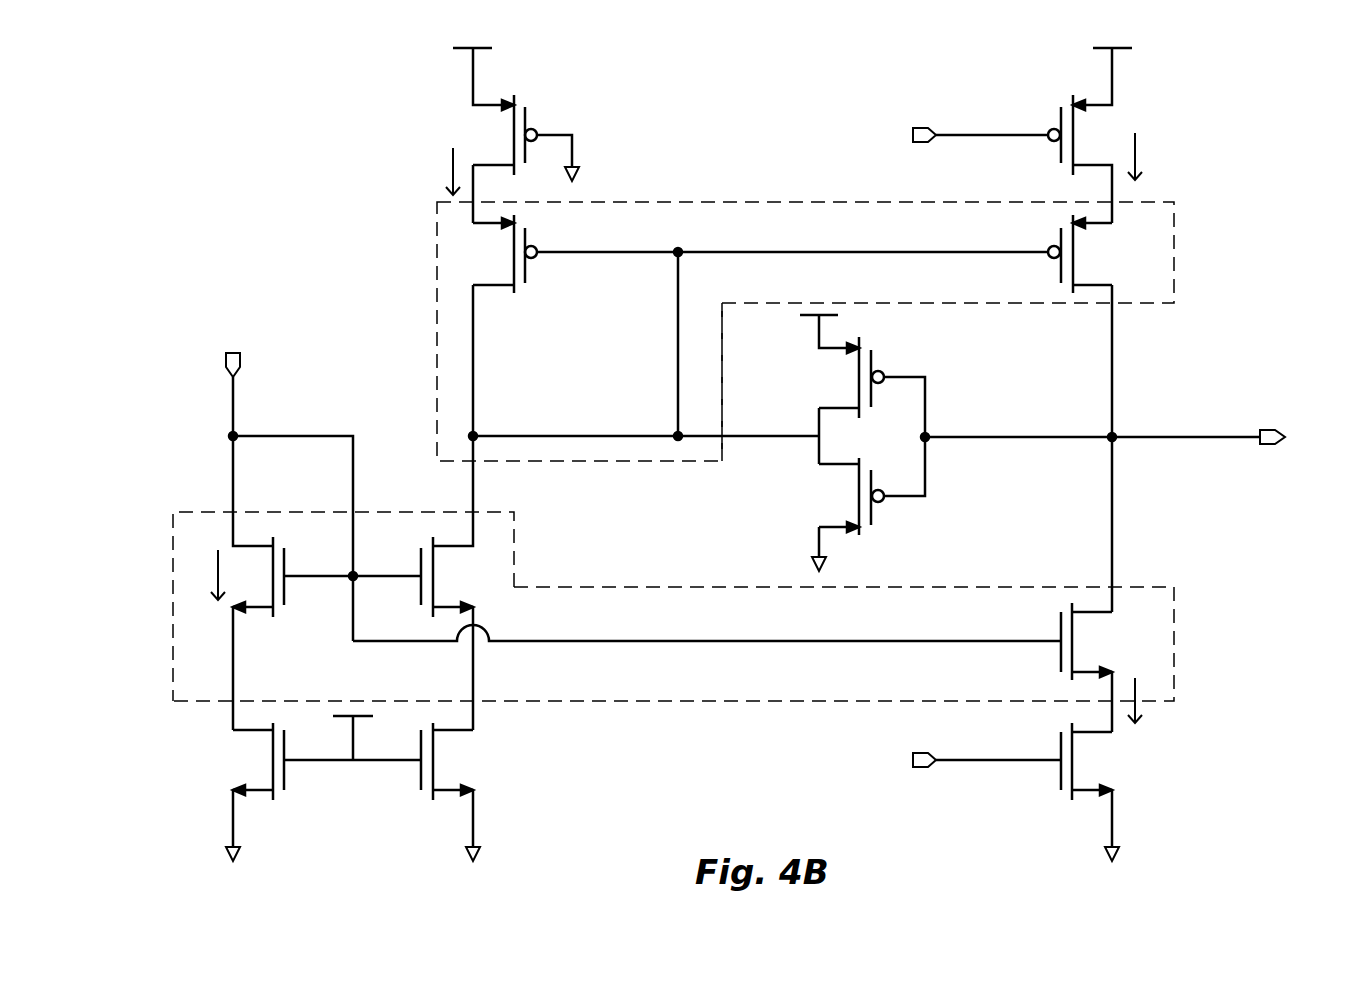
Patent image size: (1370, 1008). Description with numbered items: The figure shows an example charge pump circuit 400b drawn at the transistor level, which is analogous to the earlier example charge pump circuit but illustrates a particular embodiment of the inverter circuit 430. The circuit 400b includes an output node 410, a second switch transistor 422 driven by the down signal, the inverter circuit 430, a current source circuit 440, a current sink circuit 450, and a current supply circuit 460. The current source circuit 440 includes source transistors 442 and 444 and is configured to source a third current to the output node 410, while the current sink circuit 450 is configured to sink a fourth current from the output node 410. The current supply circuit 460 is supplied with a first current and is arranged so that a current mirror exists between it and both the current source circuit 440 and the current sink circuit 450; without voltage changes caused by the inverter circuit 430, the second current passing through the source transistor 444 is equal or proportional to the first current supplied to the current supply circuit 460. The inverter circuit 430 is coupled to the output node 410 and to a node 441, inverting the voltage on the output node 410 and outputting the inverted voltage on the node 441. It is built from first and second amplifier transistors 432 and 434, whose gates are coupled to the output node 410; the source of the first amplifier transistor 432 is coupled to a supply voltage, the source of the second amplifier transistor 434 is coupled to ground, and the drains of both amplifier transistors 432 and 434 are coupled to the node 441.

The charge pump circuit 400b is at (1263, 98).
The output node 410 is at (1114, 434).
The second switch transistor 422 is at (1095, 790).
The inverter circuit 430 is at (938, 355).
The first amplifier transistor 432 is at (833, 405).
The second amplifier transistor 434 is at (833, 525).
The current source circuit 440 is at (1174, 212).
The node 441 is at (680, 245).
The source transistor 442 is at (1093, 282).
The source transistor 444 is at (491, 287).
The current sink circuit 450 is at (1174, 590).
The current supply circuit 460 is at (213, 468).